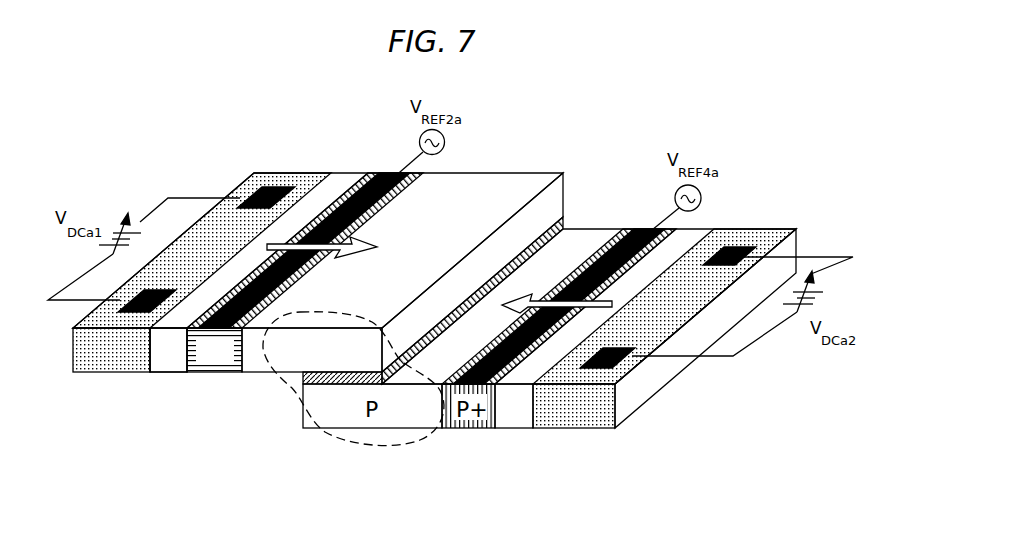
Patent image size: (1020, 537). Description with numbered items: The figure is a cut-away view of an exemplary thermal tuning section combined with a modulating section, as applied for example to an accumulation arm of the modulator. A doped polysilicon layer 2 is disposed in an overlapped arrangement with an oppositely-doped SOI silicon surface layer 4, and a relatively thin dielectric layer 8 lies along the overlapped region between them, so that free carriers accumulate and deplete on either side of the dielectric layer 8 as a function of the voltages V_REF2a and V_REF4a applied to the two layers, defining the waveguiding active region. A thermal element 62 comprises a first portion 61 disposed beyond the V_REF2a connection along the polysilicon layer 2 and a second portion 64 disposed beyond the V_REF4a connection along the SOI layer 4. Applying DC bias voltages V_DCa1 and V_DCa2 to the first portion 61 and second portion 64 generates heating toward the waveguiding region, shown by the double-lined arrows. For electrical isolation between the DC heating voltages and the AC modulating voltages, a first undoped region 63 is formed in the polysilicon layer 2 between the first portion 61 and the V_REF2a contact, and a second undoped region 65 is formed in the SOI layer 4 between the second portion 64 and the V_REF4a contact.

The doped silicon layer 2 is at (527, 178).
The silicon surface layer 4 is at (607, 230).
The dielectric layer 8 is at (567, 221).
The first portion 61 is at (296, 176).
The thermal element 62 is at (144, 390).
The first undoped region 63 is at (165, 357).
The second portion 64 is at (585, 418).
The second undoped region 65 is at (515, 413).